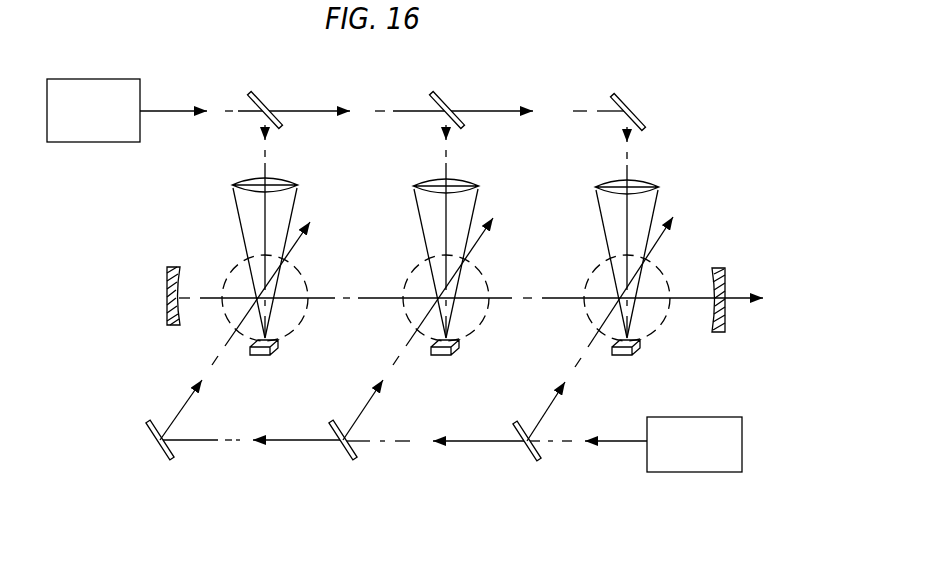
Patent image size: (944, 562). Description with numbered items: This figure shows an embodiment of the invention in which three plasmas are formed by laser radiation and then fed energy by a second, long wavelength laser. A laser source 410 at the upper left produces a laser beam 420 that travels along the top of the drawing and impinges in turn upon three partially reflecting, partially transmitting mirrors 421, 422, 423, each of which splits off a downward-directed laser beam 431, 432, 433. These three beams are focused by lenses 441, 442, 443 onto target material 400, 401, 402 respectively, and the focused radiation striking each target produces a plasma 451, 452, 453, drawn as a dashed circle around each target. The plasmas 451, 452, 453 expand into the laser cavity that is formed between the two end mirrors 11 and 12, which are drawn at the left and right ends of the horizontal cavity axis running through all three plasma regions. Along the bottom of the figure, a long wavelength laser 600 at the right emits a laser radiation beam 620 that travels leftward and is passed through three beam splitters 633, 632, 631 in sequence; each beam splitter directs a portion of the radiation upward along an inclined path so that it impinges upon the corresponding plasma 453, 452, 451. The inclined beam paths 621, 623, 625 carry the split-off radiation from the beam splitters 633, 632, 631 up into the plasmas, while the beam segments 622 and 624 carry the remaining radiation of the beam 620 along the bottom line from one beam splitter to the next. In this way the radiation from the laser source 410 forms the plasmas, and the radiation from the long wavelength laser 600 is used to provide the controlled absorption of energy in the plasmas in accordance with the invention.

The mirror 11 is at (172, 266).
The mirror 12 is at (718, 268).
The target material 400 is at (280, 348).
The target material 401 is at (462, 350).
The target material 402 is at (641, 350).
The laser source 410 is at (95, 79).
The laser beam 420 is at (190, 110).
The partially reflecting, partially transmitting mirror 421 is at (270, 100).
The partially reflecting, partially transmitting mirror 422 is at (454, 100).
The partially reflecting, partially transmitting mirror 423 is at (632, 102).
The laser beam 431 is at (262, 160).
The laser beam 432 is at (444, 163).
The laser beam 433 is at (624, 165).
The lens 441 is at (232, 184).
The lens 442 is at (414, 186).
The lens 443 is at (597, 187).
The plasma 451 is at (237, 263).
The plasma 452 is at (409, 271).
The plasma 453 is at (591, 273).
The long wavelength laser 600 is at (694, 472).
The laser radiation beam 620 is at (612, 437).
The first reflected pump beam 621 is at (553, 400).
The second pump beam segment 622 is at (426, 437).
The second reflected pump beam 623 is at (369, 402).
The third pump beam segment 624 is at (253, 437).
The third reflected pump beam 625 is at (190, 392).
The beam splitter 631 is at (157, 457).
The beam splitter 632 is at (340, 457).
The beam splitter 633 is at (524, 462).